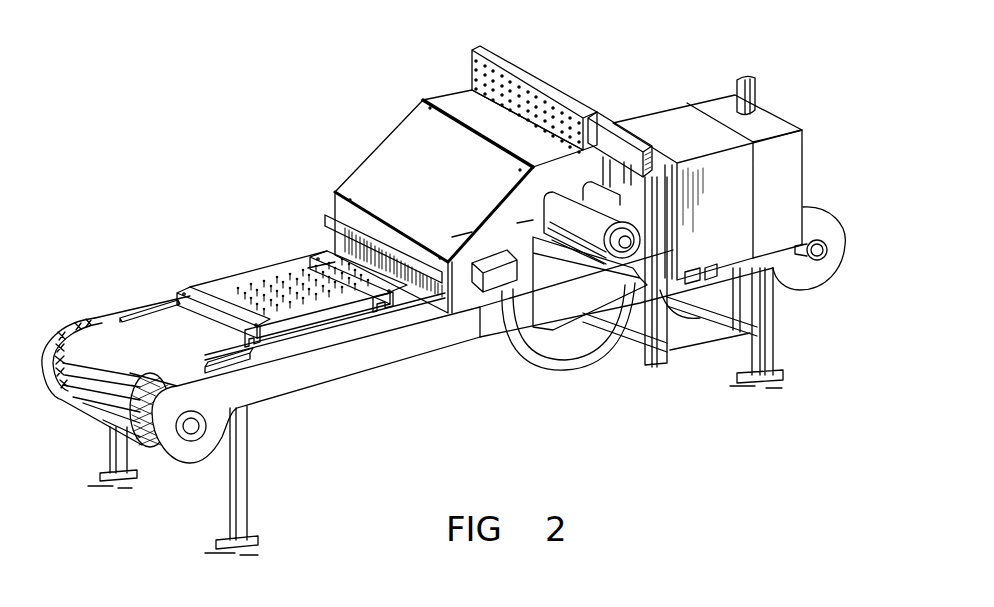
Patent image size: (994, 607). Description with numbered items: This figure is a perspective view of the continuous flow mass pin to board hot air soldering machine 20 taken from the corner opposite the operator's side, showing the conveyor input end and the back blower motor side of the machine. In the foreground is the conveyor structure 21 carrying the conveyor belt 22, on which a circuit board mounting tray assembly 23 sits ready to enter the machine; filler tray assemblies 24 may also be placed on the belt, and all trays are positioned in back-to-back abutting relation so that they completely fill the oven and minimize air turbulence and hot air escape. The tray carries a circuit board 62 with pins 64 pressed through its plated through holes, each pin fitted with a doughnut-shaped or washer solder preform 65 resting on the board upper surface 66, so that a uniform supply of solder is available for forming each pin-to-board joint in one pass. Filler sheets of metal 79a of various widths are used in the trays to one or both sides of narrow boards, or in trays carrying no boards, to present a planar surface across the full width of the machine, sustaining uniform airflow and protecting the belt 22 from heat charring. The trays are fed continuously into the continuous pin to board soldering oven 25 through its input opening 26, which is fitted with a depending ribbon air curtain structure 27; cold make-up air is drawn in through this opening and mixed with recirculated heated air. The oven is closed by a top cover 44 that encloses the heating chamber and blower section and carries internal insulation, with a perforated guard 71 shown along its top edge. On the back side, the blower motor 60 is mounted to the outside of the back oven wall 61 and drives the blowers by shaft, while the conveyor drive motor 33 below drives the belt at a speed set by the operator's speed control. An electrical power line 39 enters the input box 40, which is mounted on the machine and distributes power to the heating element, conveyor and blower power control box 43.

The continuous flow mass pin to board hot air soldering machine 20 is at (637, 60).
The conveyor structure 21 is at (293, 398).
The conveyor belt 22 is at (120, 323).
The circuit board mounting tray assembly 23 is at (240, 286).
The filler tray assembly 24 is at (350, 252).
The continuous pin to board soldering oven 25 is at (388, 133).
The input opening 26 is at (343, 244).
The depending ribbon air curtain structure 27 is at (384, 252).
The conveyor drive motor 33 is at (670, 312).
The electrical power line 39 is at (760, 89).
The input box 40 is at (781, 124).
The heating element, conveyor and blower power control box 43 is at (681, 115).
The top cover 44 is at (371, 161).
The blower motor 60 is at (629, 224).
The back oven wall 61 is at (463, 299).
The circuit board 62 is at (311, 277).
The pins 64 is at (273, 290).
The solder preforms 65 is at (293, 283).
The board upper surface 66 is at (226, 298).
The perforated panel 71 is at (524, 76).
The filler sheets of metal 79a is at (208, 289).